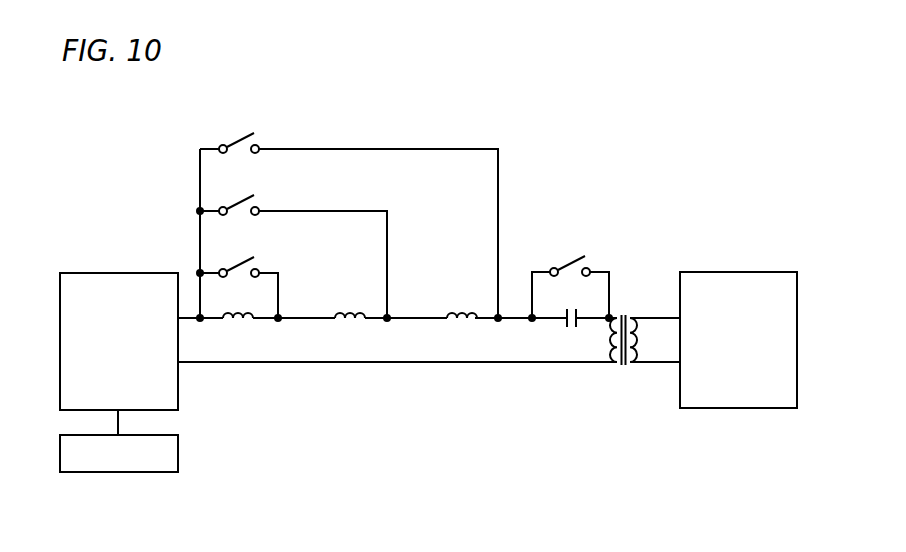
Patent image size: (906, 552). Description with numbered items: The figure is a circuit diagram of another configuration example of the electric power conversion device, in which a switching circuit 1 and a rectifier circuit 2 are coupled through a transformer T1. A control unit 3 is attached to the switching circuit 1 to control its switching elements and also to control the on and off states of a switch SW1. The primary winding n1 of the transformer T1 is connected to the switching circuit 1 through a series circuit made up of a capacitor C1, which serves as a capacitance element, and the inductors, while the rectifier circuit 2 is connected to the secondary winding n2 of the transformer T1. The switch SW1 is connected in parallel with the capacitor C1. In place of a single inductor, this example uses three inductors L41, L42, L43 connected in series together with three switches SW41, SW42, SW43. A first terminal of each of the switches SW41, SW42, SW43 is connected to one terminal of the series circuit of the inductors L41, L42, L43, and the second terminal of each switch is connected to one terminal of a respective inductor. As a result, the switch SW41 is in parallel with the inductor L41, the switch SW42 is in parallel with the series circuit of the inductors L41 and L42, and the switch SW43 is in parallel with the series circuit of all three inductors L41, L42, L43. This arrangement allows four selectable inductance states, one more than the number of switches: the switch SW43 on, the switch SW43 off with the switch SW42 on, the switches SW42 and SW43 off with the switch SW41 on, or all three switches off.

The switching circuit 1 is at (118, 273).
The rectifier circuit 2 is at (738, 272).
The control unit 3 is at (120, 472).
The switch SW1 is at (570, 273).
The switch SW41 is at (239, 273).
The switch SW42 is at (293, 242).
The switch SW43 is at (349, 211).
The inductor L41 is at (239, 302).
The inductor L42 is at (350, 302).
The inductor L43 is at (461, 302).
The capacitor C1 is at (570, 306).
The transformer T1 is at (631, 356).
The primary winding n1 is at (600, 340).
The secondary winding n2 is at (655, 340).